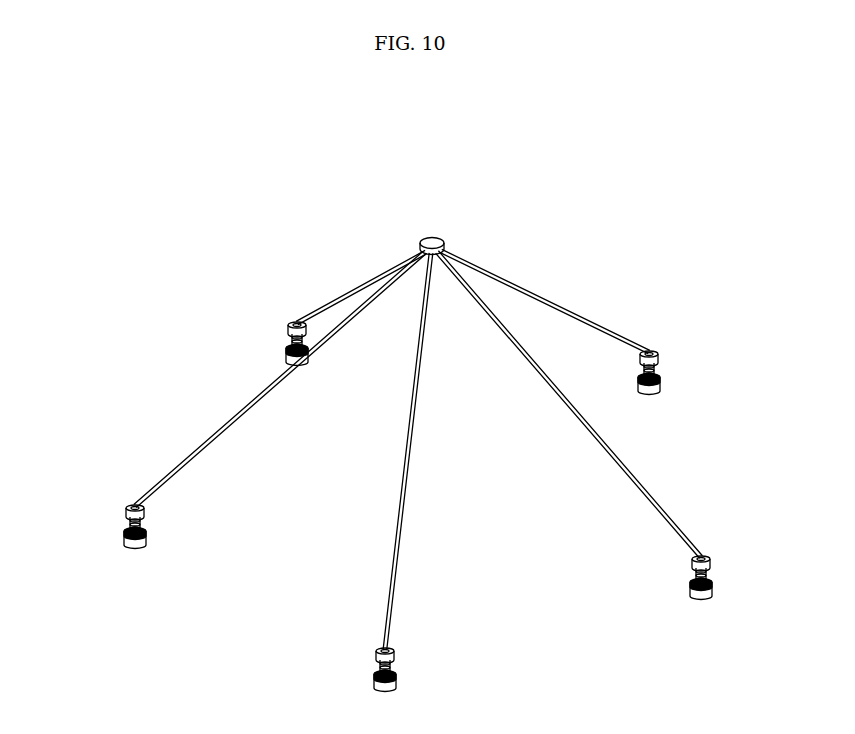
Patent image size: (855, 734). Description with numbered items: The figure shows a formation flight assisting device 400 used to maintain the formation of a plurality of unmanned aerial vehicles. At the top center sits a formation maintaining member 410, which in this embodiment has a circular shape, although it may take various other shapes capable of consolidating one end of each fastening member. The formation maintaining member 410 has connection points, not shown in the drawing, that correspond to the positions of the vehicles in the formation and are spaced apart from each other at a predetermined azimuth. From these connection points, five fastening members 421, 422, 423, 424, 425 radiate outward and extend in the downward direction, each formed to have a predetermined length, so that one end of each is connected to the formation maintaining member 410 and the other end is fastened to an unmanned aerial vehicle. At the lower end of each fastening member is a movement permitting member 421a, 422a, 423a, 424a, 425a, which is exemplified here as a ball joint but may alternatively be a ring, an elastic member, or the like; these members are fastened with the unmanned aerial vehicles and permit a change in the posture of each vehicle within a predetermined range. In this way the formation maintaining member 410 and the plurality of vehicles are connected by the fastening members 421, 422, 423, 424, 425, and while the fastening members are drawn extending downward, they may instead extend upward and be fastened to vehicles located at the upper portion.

The formation flight assisting device 400 is at (630, 230).
The formation maintaining member 410 is at (437, 240).
The fastening member 421 is at (364, 286).
The movement permitting member 421a is at (287, 328).
The fastening member 422 is at (205, 446).
The movement permitting member 422a is at (126, 508).
The fastening member 423 is at (398, 577).
The movement permitting member 423a is at (396, 656).
The fastening member 424 is at (645, 490).
The movement permitting member 424a is at (712, 552).
The fastening member 425 is at (580, 316).
The movement permitting member 425a is at (655, 350).